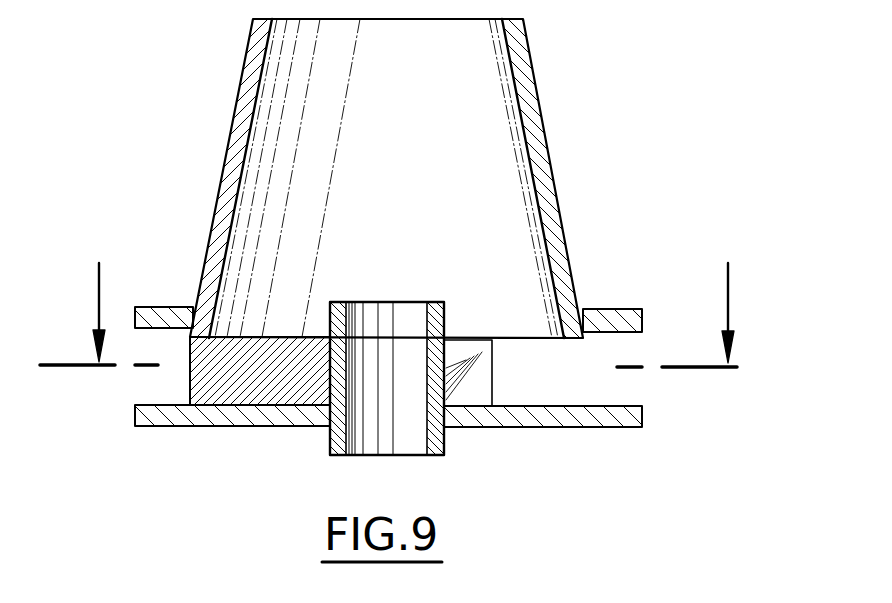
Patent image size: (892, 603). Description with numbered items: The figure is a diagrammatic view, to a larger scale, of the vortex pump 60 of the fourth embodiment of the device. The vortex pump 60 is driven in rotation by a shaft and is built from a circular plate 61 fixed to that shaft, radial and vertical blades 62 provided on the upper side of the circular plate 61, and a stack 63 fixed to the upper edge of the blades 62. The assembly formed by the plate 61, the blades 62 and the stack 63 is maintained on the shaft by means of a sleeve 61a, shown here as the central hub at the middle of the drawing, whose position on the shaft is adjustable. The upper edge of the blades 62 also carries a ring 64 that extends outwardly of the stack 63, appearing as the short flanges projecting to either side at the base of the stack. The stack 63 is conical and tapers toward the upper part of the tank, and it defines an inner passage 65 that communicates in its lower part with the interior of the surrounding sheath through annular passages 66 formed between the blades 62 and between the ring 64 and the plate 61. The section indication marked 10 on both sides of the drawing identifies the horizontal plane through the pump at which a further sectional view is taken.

The vortex pump 60 is at (439, 178).
The circular plate 61 is at (575, 418).
The sleeve 61a is at (445, 443).
The blades 62 is at (278, 385).
The stack 63 is at (532, 126).
The ring 64 is at (157, 313).
The inner passage 65 is at (310, 137).
The annular passages 66 is at (158, 385).
The section view indicator 10 is at (394, 313).